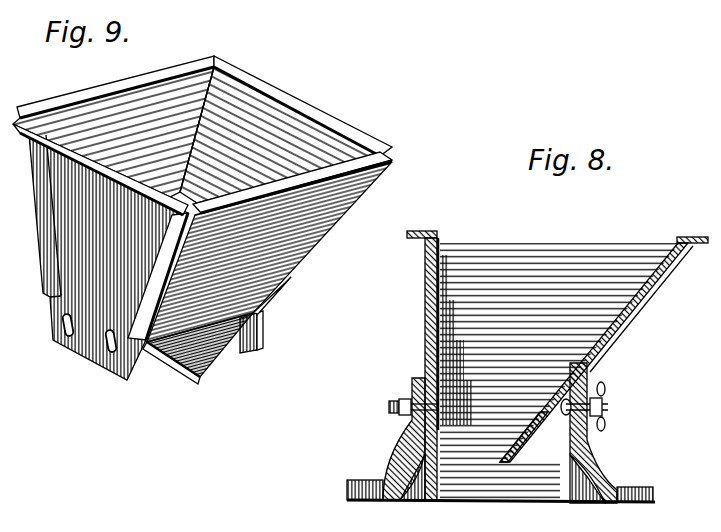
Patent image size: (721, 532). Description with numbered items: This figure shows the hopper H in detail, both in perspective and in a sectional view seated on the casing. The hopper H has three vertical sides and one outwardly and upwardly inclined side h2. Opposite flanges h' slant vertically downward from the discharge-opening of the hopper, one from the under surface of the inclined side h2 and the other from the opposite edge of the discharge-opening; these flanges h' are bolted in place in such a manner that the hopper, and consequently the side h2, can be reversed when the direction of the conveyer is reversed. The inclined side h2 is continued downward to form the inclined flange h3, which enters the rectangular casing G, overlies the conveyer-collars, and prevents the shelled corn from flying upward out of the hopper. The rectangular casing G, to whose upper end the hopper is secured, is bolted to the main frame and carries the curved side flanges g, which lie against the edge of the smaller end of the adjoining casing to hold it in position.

In FIG. 9, the hopper H is at (202, 125).
In FIG. 8, the hopper H is at (578, 227).
In FIG. 9, the flanges h' is at (174, 298).
In FIG. 9, the inclined side h2 is at (269, 234).
In FIG. 8, the inclined side h2 is at (640, 290).
In FIG. 9, the inclined flange h3 is at (198, 352).
In FIG. 8, the inclined flange h3 is at (524, 444).
In FIG. 8, the curved side flanges g is at (492, 433).
In FIG. 8, the rectangular casing G is at (501, 506).